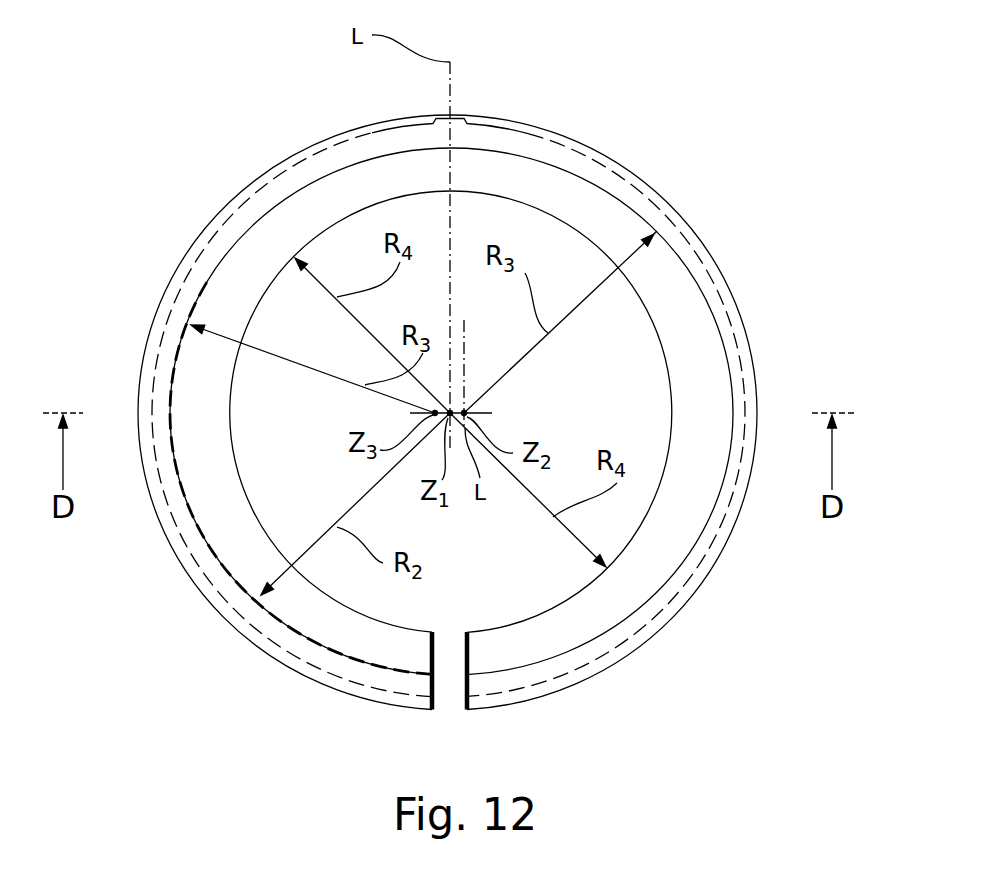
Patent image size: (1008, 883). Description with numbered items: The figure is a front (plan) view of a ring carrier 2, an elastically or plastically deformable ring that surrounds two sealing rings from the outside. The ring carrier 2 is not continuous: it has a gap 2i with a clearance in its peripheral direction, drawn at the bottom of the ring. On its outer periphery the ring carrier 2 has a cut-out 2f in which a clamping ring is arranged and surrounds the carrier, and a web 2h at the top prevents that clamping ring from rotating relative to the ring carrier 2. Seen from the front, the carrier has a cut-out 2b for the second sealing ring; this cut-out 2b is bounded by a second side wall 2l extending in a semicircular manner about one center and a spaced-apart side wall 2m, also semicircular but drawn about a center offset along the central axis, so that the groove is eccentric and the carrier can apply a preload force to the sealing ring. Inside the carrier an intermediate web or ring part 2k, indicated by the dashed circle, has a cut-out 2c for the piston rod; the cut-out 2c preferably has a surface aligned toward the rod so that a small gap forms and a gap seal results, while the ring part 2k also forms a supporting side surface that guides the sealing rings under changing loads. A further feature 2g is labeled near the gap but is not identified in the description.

The ring carrier 2 is at (475, 410).
The cut-out for the second sealing ring 2b is at (238, 545).
The cut-out for the piston rod 2c is at (660, 376).
The cut-out 2f is at (602, 162).
The inner surface region near gap 2g is at (497, 602).
The web 2h is at (455, 115).
The gap 2i is at (447, 700).
The intermediate web 2k is at (647, 580).
The second side wall 2l is at (190, 437).
The side wall 2m is at (688, 546).